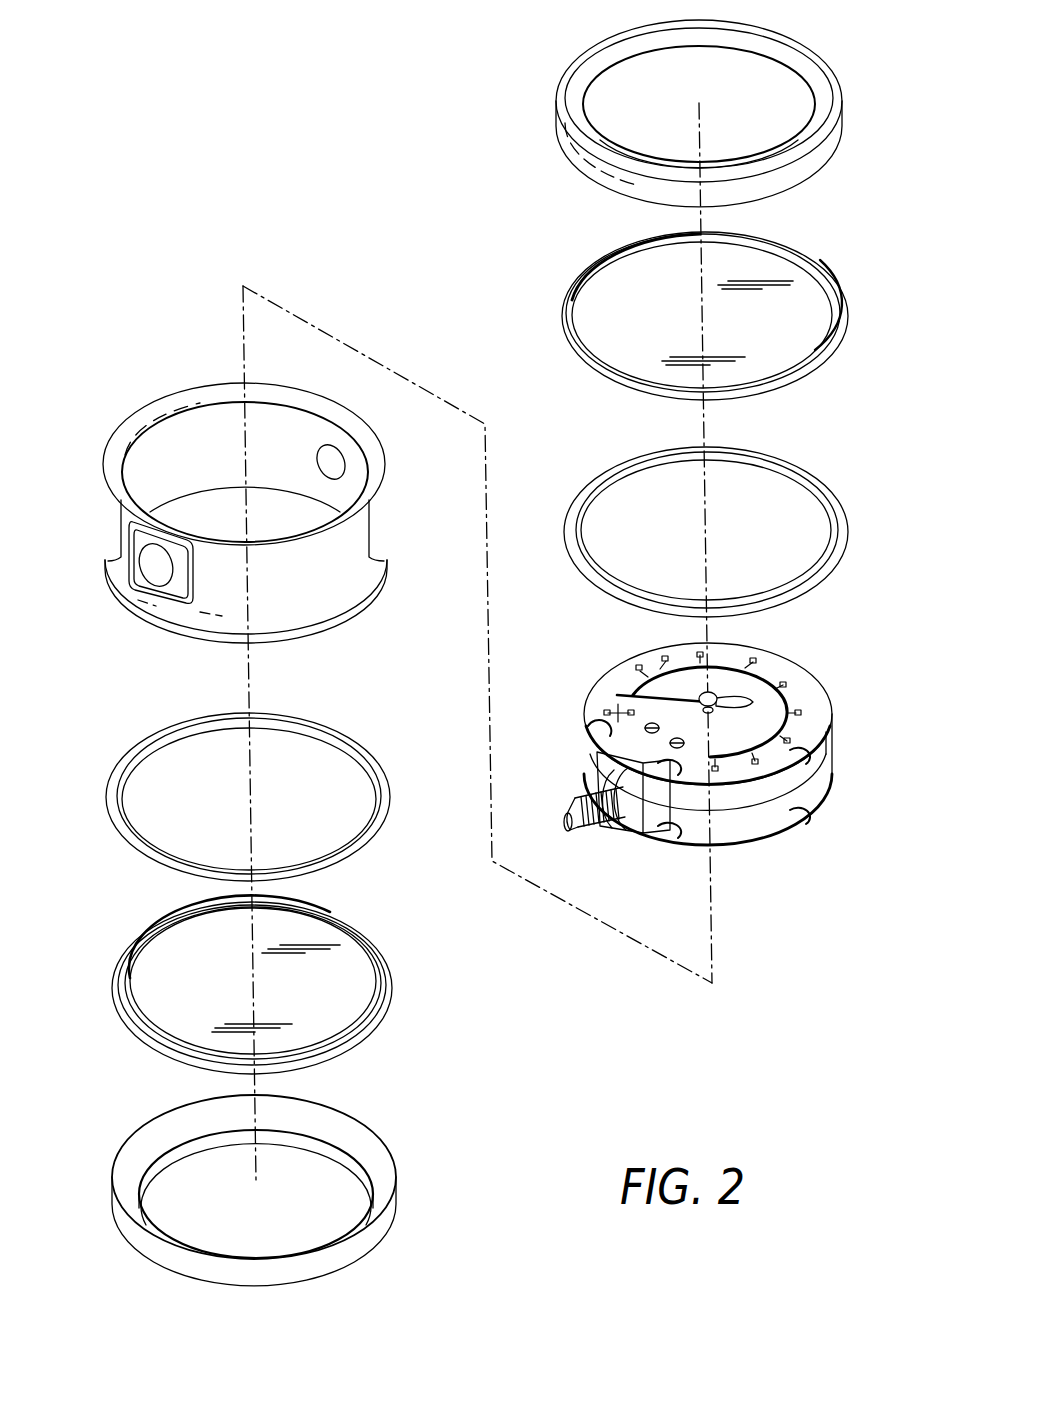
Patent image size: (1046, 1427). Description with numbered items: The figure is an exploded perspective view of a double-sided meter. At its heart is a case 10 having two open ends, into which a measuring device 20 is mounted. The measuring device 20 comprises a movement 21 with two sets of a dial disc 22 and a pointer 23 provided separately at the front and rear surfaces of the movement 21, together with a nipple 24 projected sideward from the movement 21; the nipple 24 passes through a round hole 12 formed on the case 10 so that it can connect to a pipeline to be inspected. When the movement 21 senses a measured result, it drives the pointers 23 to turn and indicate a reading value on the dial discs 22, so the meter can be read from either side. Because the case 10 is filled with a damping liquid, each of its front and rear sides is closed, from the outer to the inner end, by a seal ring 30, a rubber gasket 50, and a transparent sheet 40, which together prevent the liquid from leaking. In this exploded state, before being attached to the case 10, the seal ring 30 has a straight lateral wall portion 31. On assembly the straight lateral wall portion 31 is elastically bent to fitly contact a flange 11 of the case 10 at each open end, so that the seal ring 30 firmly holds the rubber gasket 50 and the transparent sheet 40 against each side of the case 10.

The case 10 is at (235, 500).
The flange 11 is at (214, 393).
The round hole 12 is at (150, 563).
The measuring device 20 is at (752, 768).
The movement 21 is at (740, 803).
The dial disc 22 is at (813, 695).
The pointer 23 is at (643, 695).
The nipple 24 is at (608, 830).
The seal ring 30 is at (835, 115).
The straight lateral wall portion 31 is at (802, 178).
The transparent sheet 40 is at (820, 357).
The rubber gasket 50 is at (820, 553).